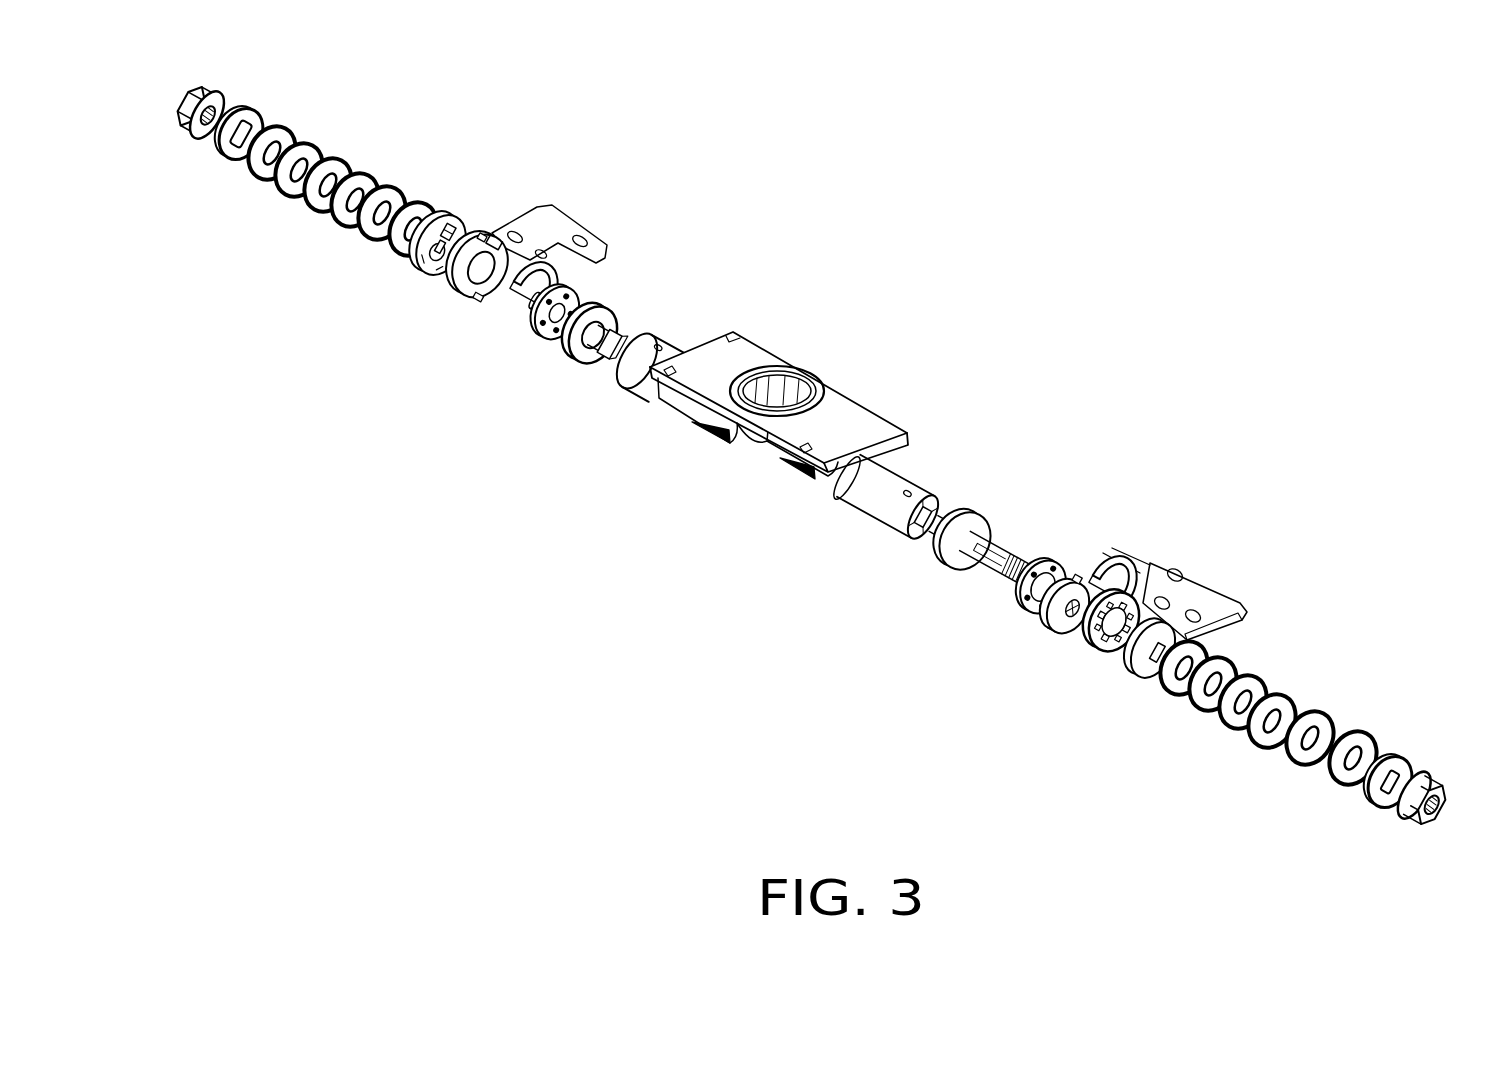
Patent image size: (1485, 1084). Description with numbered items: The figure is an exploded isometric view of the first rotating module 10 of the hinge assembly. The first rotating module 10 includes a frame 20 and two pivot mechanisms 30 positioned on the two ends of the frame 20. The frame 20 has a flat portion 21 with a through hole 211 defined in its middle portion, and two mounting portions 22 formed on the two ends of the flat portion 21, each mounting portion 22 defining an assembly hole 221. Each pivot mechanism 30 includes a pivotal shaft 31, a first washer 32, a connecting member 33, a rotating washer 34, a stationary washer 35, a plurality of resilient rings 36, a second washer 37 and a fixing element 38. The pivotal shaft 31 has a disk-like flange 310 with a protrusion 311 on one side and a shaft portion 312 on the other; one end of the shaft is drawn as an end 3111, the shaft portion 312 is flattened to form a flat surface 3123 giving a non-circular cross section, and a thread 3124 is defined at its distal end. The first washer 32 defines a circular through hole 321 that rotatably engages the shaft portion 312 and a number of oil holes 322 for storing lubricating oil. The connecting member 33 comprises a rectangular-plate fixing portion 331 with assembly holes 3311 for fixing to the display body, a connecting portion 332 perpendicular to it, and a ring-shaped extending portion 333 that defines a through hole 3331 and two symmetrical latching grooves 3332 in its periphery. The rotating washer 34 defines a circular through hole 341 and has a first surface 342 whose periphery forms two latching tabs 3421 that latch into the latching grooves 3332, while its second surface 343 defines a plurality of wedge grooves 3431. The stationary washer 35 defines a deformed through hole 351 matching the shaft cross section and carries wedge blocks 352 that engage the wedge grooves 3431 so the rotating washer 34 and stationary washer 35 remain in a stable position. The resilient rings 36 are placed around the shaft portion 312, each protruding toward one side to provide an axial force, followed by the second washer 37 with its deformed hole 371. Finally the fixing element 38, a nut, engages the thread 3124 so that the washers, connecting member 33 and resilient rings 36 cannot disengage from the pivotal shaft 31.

The first rotating module 10 is at (924, 299).
The frame 20 is at (730, 458).
The flat portion 21 is at (832, 407).
The through hole 211 is at (757, 387).
The mounting portion 22 is at (638, 345).
The assembly hole 221 is at (940, 503).
The pivot mechanism 30 is at (508, 416).
The pivotal shaft 31 is at (585, 360).
The flat end of first shaft 3111 is at (603, 347).
The first washer 32 is at (547, 348).
The oil holes 322 is at (586, 302).
The connecting member 33 is at (515, 320).
The rotating washer 34 is at (462, 296).
The latching tabs 3421 is at (478, 297).
The stationary washer 35 is at (430, 268).
The wedge blocks 352 is at (447, 222).
The resilient rings 36 is at (387, 274).
The second washer 37 is at (237, 157).
The fixing element 38 is at (202, 134).
The first surface 342 is at (553, 224).
The flange 310 is at (938, 552).
The protrusion 311 is at (910, 523).
The shaft portion 312 is at (961, 539).
The flat surface 3123 is at (990, 554).
The thread 3124 is at (1015, 569).
The circular through hole 321 is at (1043, 583).
The fixing portion 331 is at (1210, 597).
The assembly holes 3311 is at (1178, 575).
The connecting portion 332 is at (1120, 560).
The latching grooves 3332 is at (1077, 578).
The extending portion 333 is at (1057, 620).
The through hole 3331 is at (1072, 608).
The circular through hole 341 is at (1145, 580).
The second surface 343 is at (1107, 660).
The wedge grooves 3431 is at (1125, 665).
The deformed through hole 351 is at (1160, 680).
The deformed hole 371 is at (1398, 777).